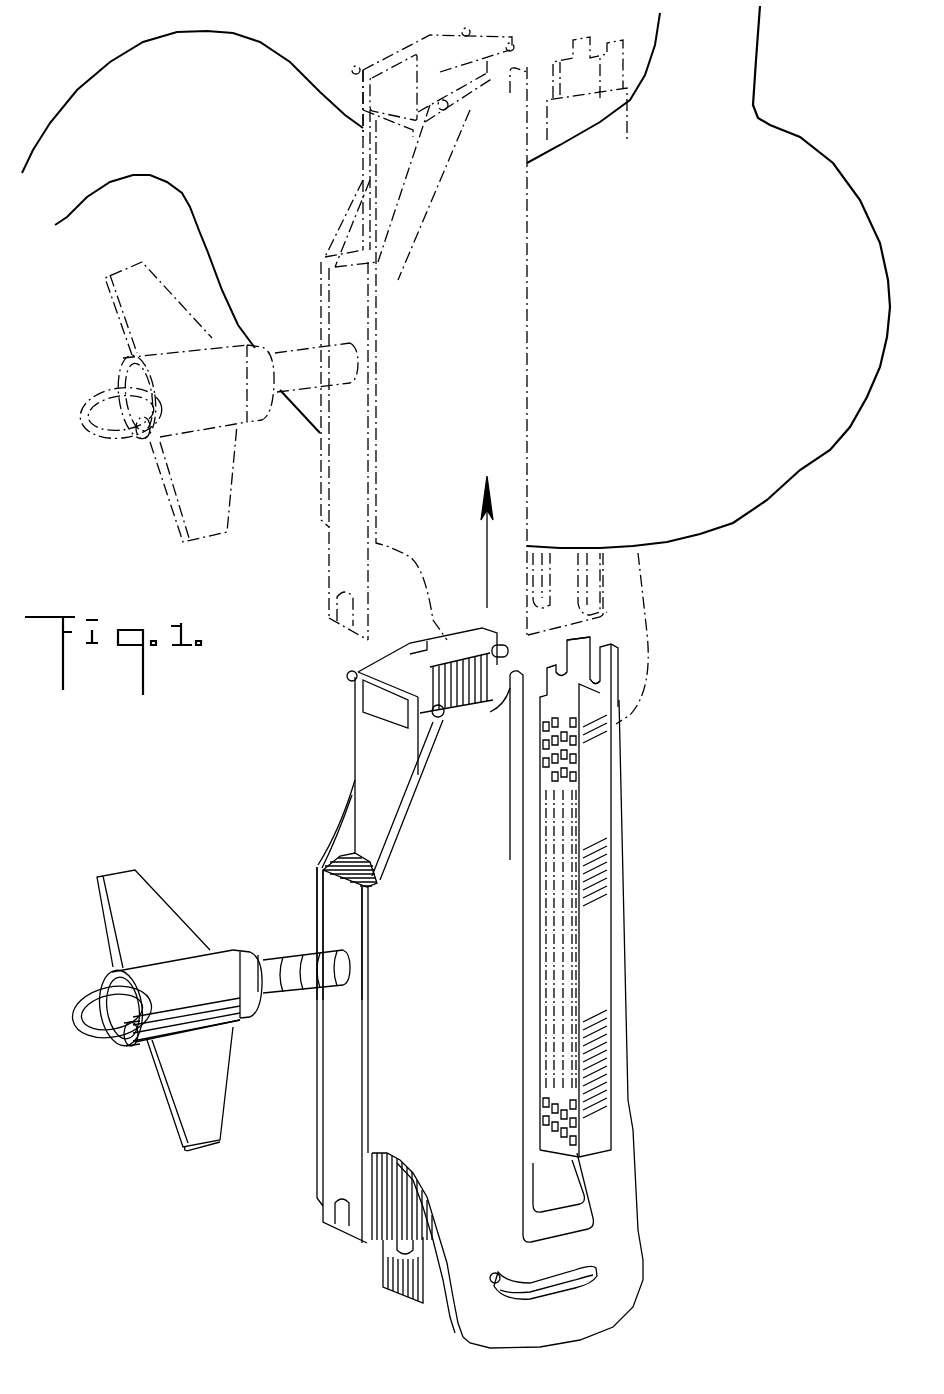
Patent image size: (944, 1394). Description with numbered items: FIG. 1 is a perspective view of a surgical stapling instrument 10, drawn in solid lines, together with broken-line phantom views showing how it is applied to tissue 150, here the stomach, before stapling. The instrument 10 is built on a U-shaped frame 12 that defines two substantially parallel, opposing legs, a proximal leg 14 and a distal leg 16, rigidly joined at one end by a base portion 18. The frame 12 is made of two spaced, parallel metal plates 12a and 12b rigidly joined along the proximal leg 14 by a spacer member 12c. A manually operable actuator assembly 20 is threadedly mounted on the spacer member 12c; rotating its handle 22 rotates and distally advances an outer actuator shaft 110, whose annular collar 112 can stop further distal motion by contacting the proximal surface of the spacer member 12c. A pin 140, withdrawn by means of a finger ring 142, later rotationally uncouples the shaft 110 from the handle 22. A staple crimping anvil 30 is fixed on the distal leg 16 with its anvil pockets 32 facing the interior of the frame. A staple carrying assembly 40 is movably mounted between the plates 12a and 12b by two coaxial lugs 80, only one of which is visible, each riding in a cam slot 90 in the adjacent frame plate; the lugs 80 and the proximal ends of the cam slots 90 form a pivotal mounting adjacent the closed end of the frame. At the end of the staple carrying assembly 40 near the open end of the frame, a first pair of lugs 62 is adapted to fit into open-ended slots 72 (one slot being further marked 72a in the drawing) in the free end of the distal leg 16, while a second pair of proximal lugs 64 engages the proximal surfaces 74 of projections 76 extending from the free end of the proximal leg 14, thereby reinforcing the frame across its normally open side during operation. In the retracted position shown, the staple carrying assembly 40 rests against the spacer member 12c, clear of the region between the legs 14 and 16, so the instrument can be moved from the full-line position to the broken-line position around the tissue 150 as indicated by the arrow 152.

The instrument 10 is at (243, 854).
The U-shaped frame 12 is at (642, 1323).
The metal plate 12a is at (318, 886).
The metal plate 12b is at (367, 917).
The spacer member 12c is at (330, 898).
The proximal leg 14 is at (380, 1125).
The distal leg 16 is at (620, 1013).
The base portion 18 is at (553, 1340).
The actuator assembly 20 is at (148, 1118).
The handle 22 is at (185, 1140).
The staple crimping anvil 30 is at (598, 887).
The anvil pockets 32 is at (567, 773).
The staple carrying assembly 40 is at (353, 771).
The lugs 62 is at (500, 645).
The proximal lugs 64 is at (348, 680).
The open-ended slots 72 is at (567, 670).
The prong notch 72a is at (608, 645).
The proximal surfaces 74 is at (491, 713).
The projections 76 is at (520, 738).
The lugs 80 is at (490, 1275).
The cam slots 90 is at (557, 1285).
The outer actuator shaft 110 is at (288, 990).
The annular collar 112 is at (258, 993).
The pin 140 is at (130, 1047).
The finger ring 142 is at (98, 1043).
The tissue 150 is at (748, 486).
The arrow 152 is at (487, 564).